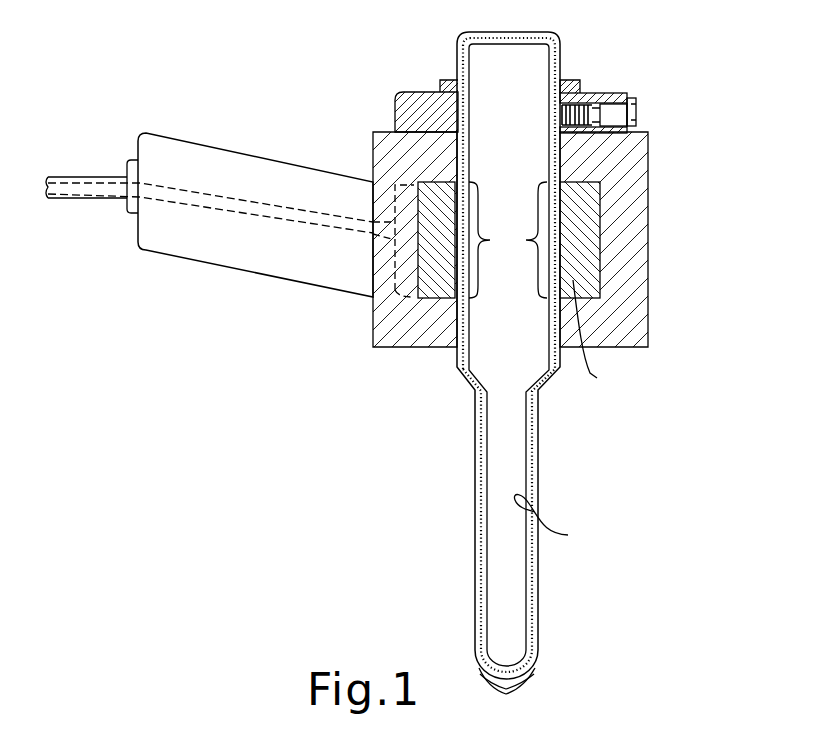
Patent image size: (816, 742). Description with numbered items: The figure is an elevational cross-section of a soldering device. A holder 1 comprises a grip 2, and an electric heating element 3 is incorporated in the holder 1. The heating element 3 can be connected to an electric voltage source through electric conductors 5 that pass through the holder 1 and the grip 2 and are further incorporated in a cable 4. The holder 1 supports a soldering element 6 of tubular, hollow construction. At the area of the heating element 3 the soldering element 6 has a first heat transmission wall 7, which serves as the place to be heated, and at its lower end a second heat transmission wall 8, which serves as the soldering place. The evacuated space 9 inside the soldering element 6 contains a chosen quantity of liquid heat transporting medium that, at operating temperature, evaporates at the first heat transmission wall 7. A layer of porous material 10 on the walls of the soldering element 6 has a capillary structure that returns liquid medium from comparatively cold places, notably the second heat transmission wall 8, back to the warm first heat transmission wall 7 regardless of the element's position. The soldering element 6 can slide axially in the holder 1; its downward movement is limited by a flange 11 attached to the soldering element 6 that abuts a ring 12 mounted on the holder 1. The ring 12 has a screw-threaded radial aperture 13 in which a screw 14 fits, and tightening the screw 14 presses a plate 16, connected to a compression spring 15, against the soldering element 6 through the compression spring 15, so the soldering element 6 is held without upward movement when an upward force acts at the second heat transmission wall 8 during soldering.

The holder 1 is at (632, 237).
The grip 2 is at (287, 262).
The electric heating element 3 is at (582, 280).
The cable 4 is at (97, 190).
The electric conductors 5 is at (257, 202).
The soldering element 6 is at (553, 31).
The first heat transmission wall 7 is at (490, 240).
The second heat transmission wall 8 is at (507, 695).
The evacuated space 9 is at (500, 352).
The layer of porous material 10 is at (470, 97).
The flange 11 is at (577, 80).
The ring 12 is at (402, 95).
The screw-threaded radial aperture 13 is at (613, 97).
The screw 14 is at (637, 108).
The compression spring 15 is at (583, 134).
The plate 16 is at (593, 133).